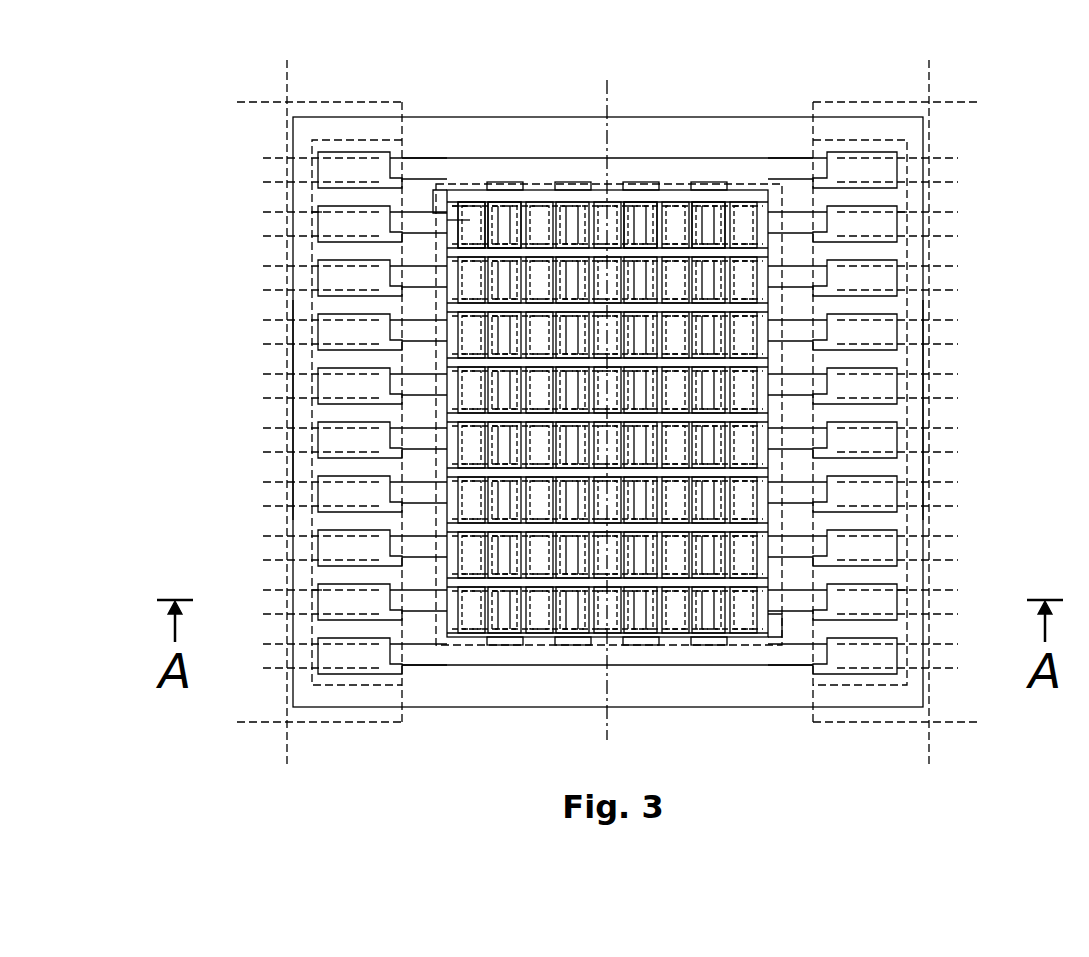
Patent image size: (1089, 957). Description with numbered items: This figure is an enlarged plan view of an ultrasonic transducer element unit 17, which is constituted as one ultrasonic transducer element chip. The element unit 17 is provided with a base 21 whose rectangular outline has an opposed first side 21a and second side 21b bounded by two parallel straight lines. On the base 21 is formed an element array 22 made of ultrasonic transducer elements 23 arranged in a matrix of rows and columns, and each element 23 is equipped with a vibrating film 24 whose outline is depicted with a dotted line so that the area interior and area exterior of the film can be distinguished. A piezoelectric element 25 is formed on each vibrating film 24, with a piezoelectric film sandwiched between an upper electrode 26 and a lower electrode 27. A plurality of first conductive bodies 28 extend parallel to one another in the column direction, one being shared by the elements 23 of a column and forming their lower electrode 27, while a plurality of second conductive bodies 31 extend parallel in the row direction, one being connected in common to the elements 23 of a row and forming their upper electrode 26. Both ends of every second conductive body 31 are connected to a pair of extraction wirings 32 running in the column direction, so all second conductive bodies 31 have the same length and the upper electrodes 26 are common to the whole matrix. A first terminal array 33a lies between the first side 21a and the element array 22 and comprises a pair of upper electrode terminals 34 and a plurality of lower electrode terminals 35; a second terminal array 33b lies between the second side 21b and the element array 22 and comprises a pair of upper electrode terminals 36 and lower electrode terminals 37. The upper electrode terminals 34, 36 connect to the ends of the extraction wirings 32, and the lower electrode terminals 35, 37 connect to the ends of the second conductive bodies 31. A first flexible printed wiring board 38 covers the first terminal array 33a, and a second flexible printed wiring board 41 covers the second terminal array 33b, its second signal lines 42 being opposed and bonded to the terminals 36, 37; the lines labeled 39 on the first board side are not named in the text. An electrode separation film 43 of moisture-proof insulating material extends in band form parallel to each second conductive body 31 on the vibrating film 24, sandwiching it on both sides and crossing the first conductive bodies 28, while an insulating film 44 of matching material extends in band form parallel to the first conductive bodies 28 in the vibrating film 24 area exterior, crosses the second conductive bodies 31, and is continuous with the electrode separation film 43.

The element unit 17 is at (487, 100).
The base 21 is at (668, 127).
The first side 21a is at (288, 407).
The second side 21b is at (932, 408).
The element array 22 is at (445, 202).
The ultrasonic transducer element 23 is at (470, 190).
The vibrating film 24 is at (445, 220).
The piezoelectric element 25 is at (460, 190).
The upper electrode 26 is at (468, 221).
The lower electrode 27 is at (500, 215).
The first conductive body 28 is at (795, 215).
The second conductive body 31 is at (448, 648).
The extraction wiring 32 is at (708, 158).
The first terminal array 33a is at (312, 352).
The second terminal array 33b is at (925, 677).
The upper electrode terminal 34 is at (323, 158).
The lower electrode terminal 35 is at (323, 210).
The upper electrode terminal 36 is at (853, 152).
The lower electrode terminal 37 is at (900, 221).
The first flexible printed wiring board 38 is at (262, 100).
The left external wiring 39 is at (263, 240).
The second flexible printed wiring board 41 is at (902, 100).
The second signal line 42 is at (958, 158).
The electrode separation film 43 is at (478, 280).
The insulating film 44 is at (740, 207).